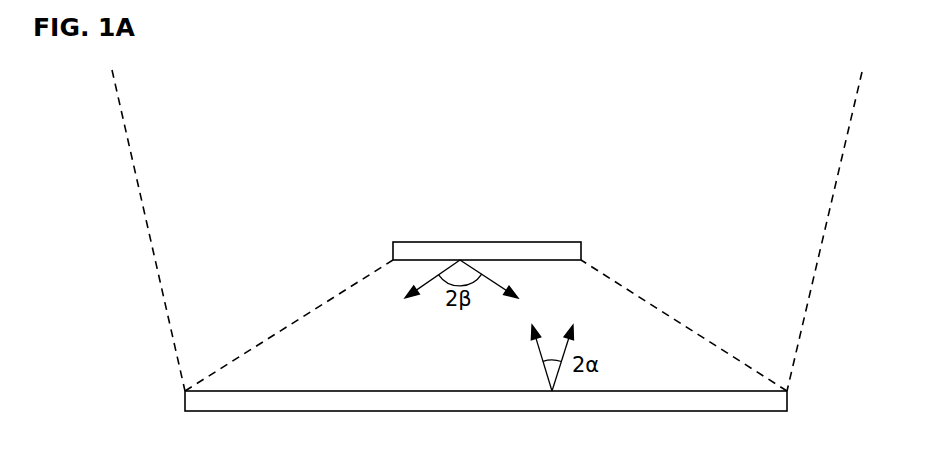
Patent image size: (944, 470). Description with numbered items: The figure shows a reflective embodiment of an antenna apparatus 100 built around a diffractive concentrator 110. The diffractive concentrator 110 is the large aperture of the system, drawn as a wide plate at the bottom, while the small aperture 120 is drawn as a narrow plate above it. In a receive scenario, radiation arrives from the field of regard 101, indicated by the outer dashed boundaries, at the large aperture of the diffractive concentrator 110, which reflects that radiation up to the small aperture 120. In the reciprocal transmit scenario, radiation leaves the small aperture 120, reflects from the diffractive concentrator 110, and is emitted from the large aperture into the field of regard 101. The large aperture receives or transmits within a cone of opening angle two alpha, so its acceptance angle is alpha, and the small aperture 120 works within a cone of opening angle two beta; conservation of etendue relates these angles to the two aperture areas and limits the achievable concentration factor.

The antenna apparatus 100 is at (486, 223).
The field of regard 101 is at (148, 250).
The diffractive concentrator 110 is at (181, 401).
The small aperture 120 is at (515, 233).